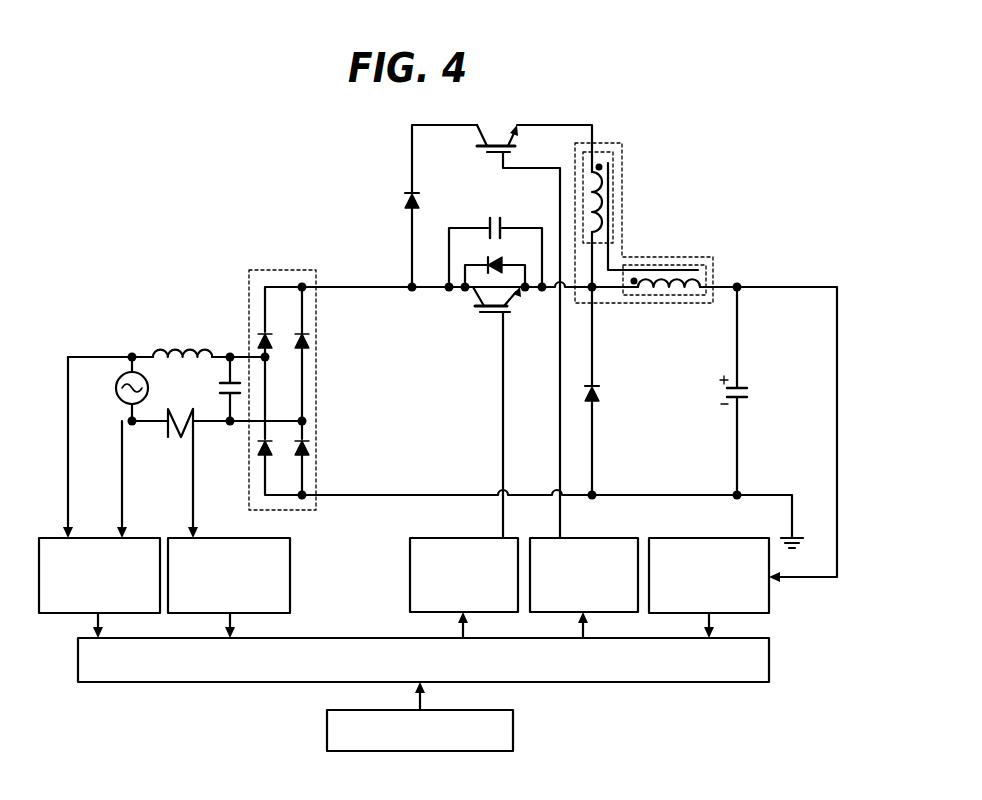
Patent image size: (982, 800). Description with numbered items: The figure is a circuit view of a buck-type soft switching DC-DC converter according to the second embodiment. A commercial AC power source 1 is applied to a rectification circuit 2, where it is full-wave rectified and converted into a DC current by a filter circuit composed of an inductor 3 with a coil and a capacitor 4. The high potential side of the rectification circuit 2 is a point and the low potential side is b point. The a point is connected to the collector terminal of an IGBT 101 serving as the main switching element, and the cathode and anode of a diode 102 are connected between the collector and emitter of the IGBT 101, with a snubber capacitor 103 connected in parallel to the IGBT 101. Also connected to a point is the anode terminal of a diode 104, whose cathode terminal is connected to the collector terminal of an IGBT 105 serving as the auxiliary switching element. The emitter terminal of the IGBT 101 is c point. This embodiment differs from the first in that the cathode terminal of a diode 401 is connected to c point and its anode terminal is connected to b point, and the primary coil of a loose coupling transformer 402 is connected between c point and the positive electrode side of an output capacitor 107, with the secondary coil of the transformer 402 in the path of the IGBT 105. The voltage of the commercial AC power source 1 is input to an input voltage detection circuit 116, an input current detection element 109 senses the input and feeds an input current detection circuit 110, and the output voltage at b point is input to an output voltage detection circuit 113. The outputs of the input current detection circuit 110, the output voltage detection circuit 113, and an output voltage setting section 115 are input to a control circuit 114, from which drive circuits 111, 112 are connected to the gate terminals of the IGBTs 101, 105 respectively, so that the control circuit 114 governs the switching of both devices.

The commercial AC power source 1 is at (123, 389).
The rectification circuit 2 is at (303, 272).
The inductor 3 is at (196, 346).
The capacitor 4 is at (214, 390).
The IGBT 101 is at (479, 318).
The diode 102 is at (522, 255).
The snubber capacitor 103 is at (502, 219).
The diode 104 is at (404, 199).
The IGBT 105 is at (479, 156).
The output capacitor 107 is at (752, 387).
The input current detection element 109 is at (176, 442).
The input current detection circuit 110 is at (238, 537).
The drive circuit 111 is at (432, 537).
The drive circuit 112 is at (592, 537).
The output voltage detection circuit 113 is at (772, 599).
The control circuit 114 is at (772, 658).
The output voltage setting section 115 is at (514, 728).
The input voltage detection circuit 116 is at (60, 615).
The diode 401 is at (600, 393).
The loose coupling transformer 402 is at (652, 222).
The a point a is at (306, 290).
The b point b is at (306, 498).
The c point c is at (526, 291).